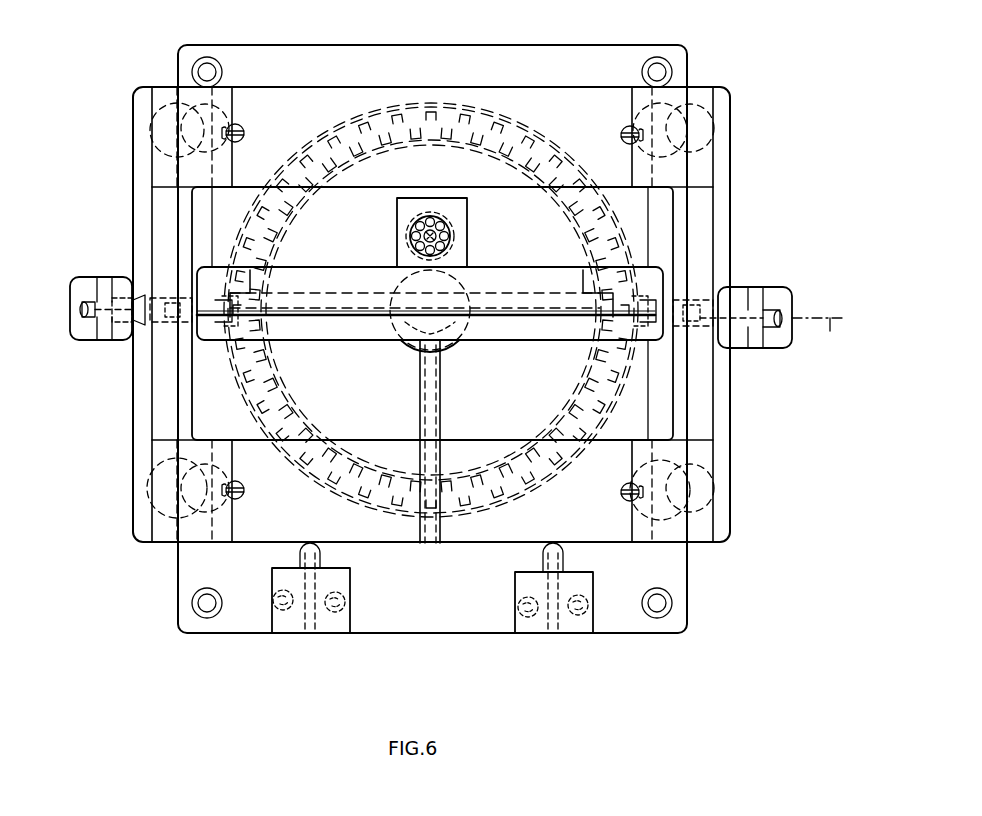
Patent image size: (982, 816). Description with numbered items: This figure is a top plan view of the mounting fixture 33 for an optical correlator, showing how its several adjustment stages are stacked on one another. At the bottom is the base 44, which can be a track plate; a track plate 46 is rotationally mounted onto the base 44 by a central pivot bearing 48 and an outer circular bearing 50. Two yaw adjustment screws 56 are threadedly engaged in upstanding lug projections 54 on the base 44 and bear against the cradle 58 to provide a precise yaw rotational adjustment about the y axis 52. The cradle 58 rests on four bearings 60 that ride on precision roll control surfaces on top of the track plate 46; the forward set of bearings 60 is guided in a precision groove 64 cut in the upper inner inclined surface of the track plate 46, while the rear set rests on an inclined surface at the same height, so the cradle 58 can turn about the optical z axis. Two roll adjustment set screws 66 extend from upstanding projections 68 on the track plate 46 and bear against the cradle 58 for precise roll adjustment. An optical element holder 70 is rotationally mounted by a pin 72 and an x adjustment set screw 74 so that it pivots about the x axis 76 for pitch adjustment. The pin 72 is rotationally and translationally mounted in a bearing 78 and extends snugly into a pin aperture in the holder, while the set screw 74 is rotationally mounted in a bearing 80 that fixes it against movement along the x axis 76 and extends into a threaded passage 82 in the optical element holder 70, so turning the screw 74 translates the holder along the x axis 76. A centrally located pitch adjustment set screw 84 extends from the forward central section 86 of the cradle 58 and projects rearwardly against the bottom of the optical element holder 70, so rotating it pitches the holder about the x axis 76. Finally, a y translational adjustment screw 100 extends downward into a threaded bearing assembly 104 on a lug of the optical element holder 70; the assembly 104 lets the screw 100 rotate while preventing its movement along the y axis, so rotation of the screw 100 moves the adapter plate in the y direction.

The mounting fixture 33 is at (737, 126).
The base 44 is at (418, 591).
The track plate 46 is at (612, 545).
The central pivot bearing 48 is at (445, 352).
The outer circular bearing 50 is at (610, 360).
The y axis 52 is at (430, 320).
The upstanding lug projections 54 is at (352, 600).
The yaw adjustment screws 56 is at (300, 615).
The cradle 58 is at (718, 420).
The bearings 60 is at (175, 125).
The precision groove 64 is at (182, 500).
The roll adjustment set screws 66 is at (85, 302).
The upstanding projections 68 is at (70, 322).
The optical element holder 70 is at (640, 268).
The pin 72 is at (705, 290).
The x adjustment set screw 74 is at (207, 280).
The x axis 76 is at (818, 339).
The bearing 78 is at (688, 330).
The bearing 80 is at (190, 325).
The threaded passage 82 is at (232, 310).
The pitch adjustment set screw 84 is at (442, 545).
The forward central section 86 is at (482, 473).
The y translational adjustment screw 100 is at (405, 237).
The threaded bearing assembly 104 is at (458, 237).